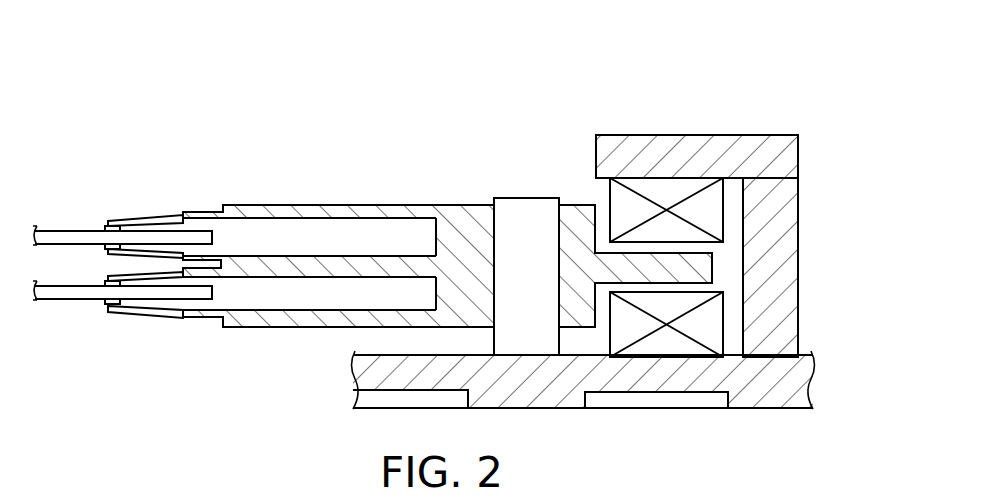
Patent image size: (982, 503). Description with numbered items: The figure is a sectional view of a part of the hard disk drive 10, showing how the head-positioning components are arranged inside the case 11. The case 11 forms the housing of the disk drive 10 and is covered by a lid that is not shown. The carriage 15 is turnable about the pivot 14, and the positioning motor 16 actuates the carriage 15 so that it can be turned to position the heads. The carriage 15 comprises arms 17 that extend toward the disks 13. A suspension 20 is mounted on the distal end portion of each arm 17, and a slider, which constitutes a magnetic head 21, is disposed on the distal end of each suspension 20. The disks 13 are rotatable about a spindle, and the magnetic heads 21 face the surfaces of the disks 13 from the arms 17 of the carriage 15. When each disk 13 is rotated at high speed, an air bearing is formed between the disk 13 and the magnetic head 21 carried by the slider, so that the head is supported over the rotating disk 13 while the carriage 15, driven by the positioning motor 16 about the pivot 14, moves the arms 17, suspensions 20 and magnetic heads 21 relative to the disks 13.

The hard disk drive 10 is at (657, 87).
The case 11 is at (761, 411).
The disk 13 is at (52, 229).
The pivot 14 is at (527, 205).
The carriage 15 is at (387, 202).
The positioning motor 16 is at (667, 343).
The arm 17 is at (290, 205).
The suspension 20 is at (153, 221).
The magnetic head 21 is at (104, 226).